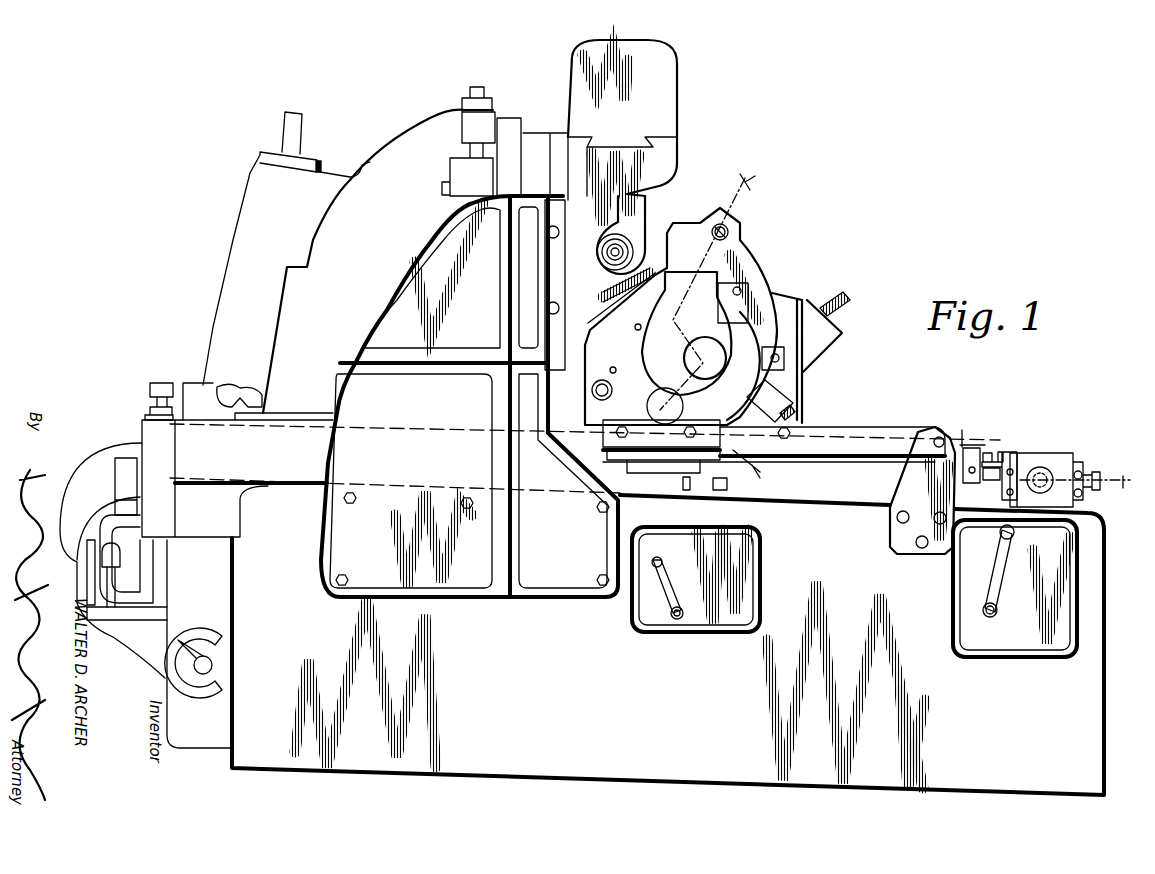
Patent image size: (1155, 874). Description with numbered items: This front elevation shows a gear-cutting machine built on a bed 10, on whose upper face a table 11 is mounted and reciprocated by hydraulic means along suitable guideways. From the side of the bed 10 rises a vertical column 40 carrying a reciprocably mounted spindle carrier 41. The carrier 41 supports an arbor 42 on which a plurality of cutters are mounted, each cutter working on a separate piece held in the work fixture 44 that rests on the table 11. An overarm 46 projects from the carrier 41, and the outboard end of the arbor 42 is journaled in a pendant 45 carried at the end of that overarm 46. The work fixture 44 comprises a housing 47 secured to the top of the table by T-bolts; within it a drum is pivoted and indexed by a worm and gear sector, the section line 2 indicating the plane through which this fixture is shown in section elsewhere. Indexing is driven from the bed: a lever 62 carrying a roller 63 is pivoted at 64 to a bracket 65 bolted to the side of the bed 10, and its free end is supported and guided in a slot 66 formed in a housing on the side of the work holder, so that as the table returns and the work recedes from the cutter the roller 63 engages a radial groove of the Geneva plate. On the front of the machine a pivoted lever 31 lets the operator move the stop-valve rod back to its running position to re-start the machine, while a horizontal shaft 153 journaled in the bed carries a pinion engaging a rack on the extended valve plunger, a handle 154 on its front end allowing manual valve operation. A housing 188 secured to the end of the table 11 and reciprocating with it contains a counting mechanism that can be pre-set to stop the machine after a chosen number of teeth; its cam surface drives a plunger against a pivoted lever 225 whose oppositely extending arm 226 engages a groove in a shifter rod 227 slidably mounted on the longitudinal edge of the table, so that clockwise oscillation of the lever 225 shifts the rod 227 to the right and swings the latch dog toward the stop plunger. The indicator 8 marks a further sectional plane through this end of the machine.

The section line 2- 2 is at (737, 334).
The section line 8- 8 is at (1041, 464).
The bed 10 is at (582, 619).
The table 11 is at (237, 460).
The pivoted lever 31 is at (998, 587).
The vertical column 40 is at (403, 150).
The spindle carrier 41 is at (545, 120).
The arbor 42 is at (627, 237).
The work fixture 44 is at (753, 260).
The pendant 45 is at (667, 148).
The overarm 46 is at (667, 70).
The housing 47 is at (807, 377).
The lever 62 is at (847, 433).
The roller 63 is at (807, 425).
The pivot 64 is at (942, 437).
The bracket 65 is at (890, 537).
The slot 66 is at (610, 447).
The horizontal shaft 153 is at (677, 623).
The handle 154 is at (663, 588).
The housing 188 is at (1040, 453).
The pivoted lever 225 is at (992, 480).
The arm 226 is at (993, 460).
The shifter rod 227 is at (963, 448).